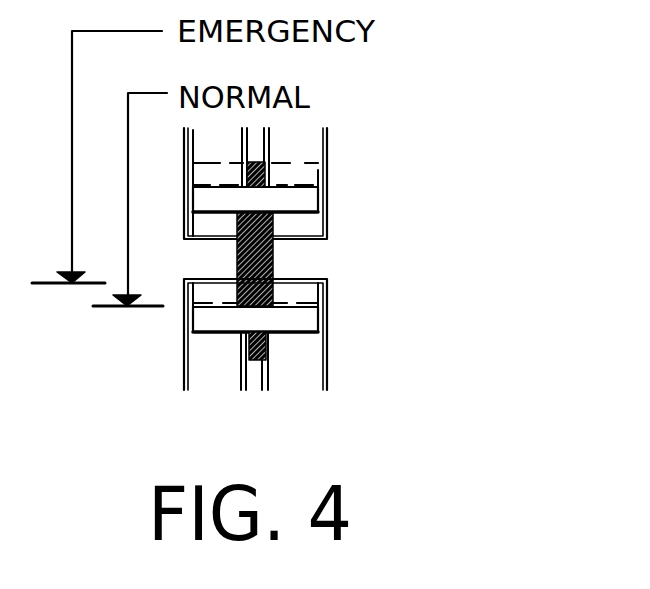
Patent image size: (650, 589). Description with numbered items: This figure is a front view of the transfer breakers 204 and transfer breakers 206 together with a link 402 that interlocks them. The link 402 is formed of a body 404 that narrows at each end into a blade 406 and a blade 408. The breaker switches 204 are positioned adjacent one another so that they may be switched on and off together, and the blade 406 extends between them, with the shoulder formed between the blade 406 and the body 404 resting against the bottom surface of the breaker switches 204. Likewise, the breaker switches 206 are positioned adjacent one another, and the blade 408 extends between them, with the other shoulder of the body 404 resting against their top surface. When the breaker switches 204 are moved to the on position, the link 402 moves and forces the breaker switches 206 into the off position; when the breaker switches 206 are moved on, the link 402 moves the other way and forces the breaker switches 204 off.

The transfer breakers 204 is at (318, 183).
The transfer breakers 206 is at (325, 360).
The link 402 is at (273, 261).
The body 404 is at (273, 275).
The blade 406 is at (272, 162).
The blade 408 is at (268, 358).